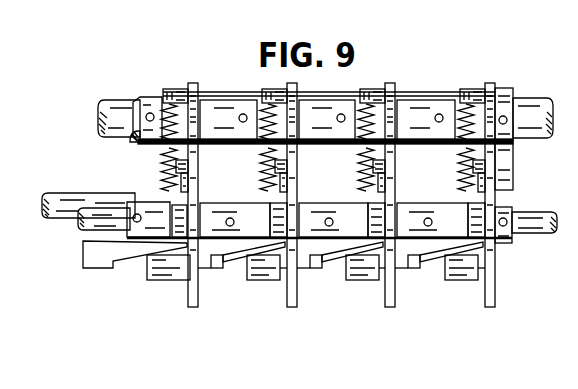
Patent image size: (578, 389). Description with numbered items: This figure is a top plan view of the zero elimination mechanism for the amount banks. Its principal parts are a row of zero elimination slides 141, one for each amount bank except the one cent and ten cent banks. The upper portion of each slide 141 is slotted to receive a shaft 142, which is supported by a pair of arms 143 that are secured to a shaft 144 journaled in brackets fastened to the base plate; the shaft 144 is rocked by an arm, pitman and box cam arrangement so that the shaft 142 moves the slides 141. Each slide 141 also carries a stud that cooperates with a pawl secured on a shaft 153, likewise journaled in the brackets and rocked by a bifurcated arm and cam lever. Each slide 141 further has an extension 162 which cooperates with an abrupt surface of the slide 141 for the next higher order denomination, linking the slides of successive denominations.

The zero elimination slide 141 is at (262, 156).
The shaft 142 is at (525, 197).
The arms 143 is at (500, 88).
The shaft 144 is at (537, 100).
The shaft 153 is at (72, 197).
The extension 162 is at (102, 257).